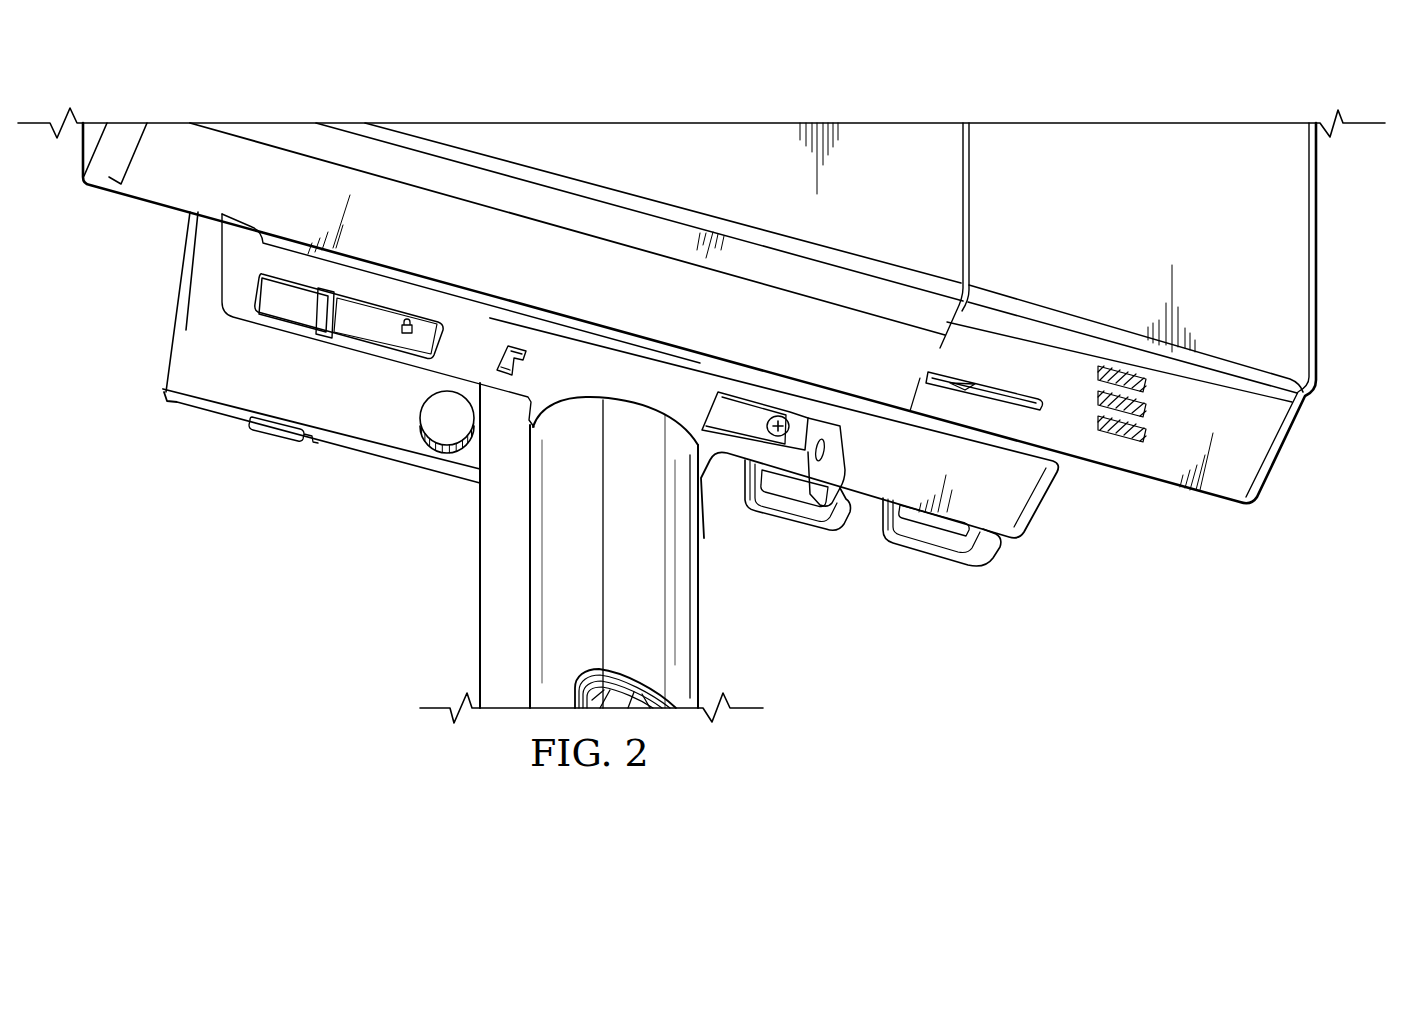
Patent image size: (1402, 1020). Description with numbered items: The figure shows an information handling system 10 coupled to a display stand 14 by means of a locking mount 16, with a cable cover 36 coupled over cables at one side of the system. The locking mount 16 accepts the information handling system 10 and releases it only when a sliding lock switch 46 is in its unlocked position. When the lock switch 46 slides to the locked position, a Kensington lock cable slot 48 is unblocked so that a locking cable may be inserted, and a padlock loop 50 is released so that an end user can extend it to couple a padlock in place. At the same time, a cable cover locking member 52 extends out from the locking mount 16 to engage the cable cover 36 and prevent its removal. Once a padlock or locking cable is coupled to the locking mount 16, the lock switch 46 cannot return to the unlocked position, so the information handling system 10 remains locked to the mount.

The information handling system 10 is at (146, 212).
The display stand 14 is at (497, 552).
The locking mount 16 is at (1047, 502).
The cable cover 36 is at (1315, 218).
The sliding lock switch 46 is at (318, 336).
The Kensington lock cable slot 48 is at (517, 359).
The padlock loop 50 is at (838, 442).
The cable cover locking member 52 is at (985, 388).